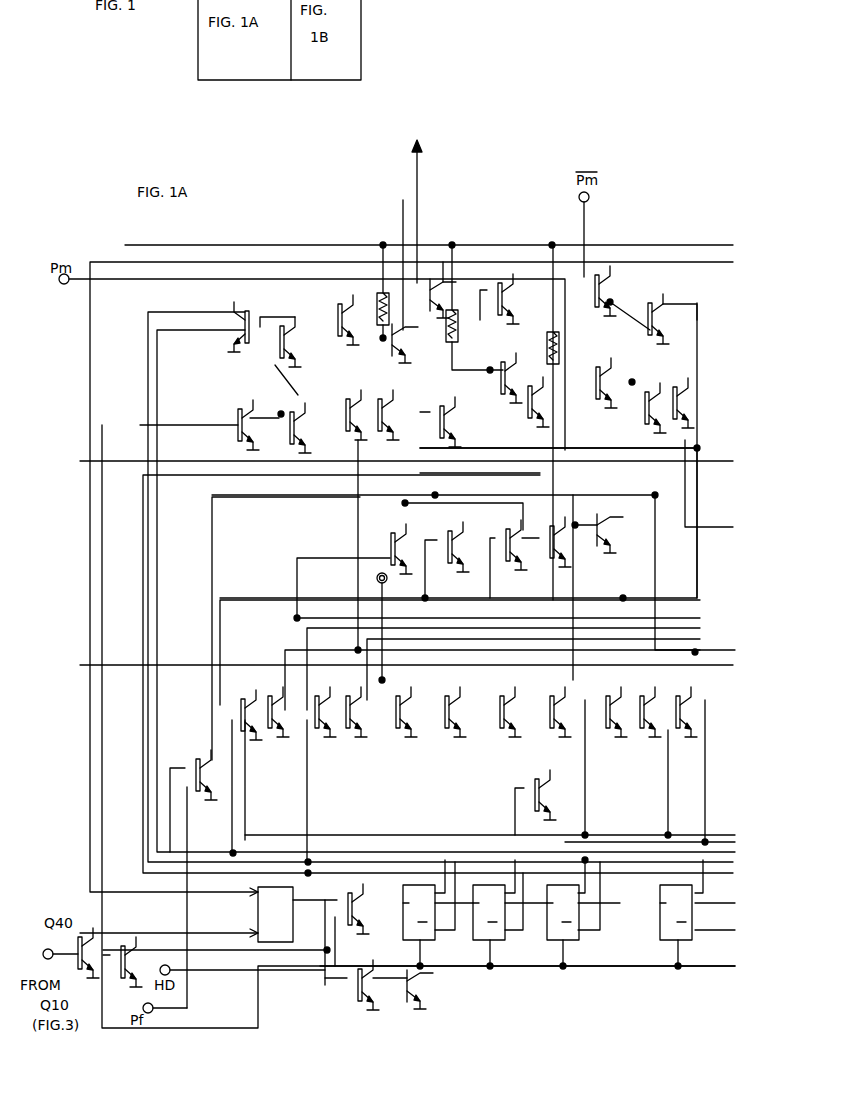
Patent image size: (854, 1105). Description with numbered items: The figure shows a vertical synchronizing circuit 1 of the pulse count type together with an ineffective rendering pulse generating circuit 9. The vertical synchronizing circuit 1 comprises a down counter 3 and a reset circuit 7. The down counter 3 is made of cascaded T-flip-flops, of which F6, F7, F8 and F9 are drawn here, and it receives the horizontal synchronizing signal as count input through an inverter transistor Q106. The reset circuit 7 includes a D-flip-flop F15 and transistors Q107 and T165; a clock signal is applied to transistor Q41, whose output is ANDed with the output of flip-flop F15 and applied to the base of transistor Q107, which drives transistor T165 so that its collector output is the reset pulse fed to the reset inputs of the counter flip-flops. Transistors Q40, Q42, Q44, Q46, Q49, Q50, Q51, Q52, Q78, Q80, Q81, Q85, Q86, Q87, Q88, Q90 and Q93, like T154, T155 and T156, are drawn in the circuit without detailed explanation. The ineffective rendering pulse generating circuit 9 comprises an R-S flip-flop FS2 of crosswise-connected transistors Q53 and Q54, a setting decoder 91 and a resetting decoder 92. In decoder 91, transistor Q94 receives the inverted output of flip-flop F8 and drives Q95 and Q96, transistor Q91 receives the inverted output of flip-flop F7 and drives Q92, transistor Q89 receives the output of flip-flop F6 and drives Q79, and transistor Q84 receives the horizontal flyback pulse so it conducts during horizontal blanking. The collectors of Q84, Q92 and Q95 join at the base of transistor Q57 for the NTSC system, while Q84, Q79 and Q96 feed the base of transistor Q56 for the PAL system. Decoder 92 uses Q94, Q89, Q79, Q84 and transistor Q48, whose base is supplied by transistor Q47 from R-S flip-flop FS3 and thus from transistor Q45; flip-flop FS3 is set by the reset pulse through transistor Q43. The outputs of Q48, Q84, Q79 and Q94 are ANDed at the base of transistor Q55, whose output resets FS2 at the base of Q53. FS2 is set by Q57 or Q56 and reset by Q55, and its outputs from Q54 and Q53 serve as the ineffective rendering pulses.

The vertical synchronizing circuit 1 is at (495, 1055).
The down counter 3 is at (620, 978).
The reset circuit 7 is at (312, 985).
The ineffective rendering pulse generating circuit 9 is at (604, 491).
The decoder 91 is at (672, 487).
The decoder 92 is at (696, 307).
The T-flip-flop F6 is at (427, 945).
The T-flip-flop F7 is at (495, 945).
The T-flip-flop F8 is at (565, 945).
The T-flip-flop F9 is at (670, 945).
The D-flip-flop F15 is at (280, 942).
The R-S flip-flop FS2 is at (615, 327).
The R-S flip-flop FS3 is at (275, 388).
The transistor Q40 is at (88, 953).
The transistor Q41 is at (122, 969).
The transistor Q42 is at (231, 342).
The transistor Q43 is at (236, 427).
The transistor Q44 is at (280, 325).
The transistor Q45 is at (291, 428).
The transistor Q46 is at (352, 406).
The transistor Q47 is at (343, 314).
The transistor Q48 is at (380, 422).
The transistor Q49 is at (437, 417).
The transistor Q50 is at (509, 299).
The transistor Q51 is at (489, 378).
The transistor Q52 is at (533, 397).
The transistor Q53 is at (613, 291).
The transistor Q54 is at (599, 397).
The transistor Q55 is at (672, 371).
The transistor Q56 is at (640, 397).
The transistor Q57 is at (673, 394).
The transistor Q78 is at (386, 544).
The transistor Q79 is at (448, 556).
The transistor Q80 is at (509, 559).
The transistor Q81 is at (549, 555).
The transistor Q84 is at (193, 791).
The transistor Q85 is at (243, 709).
The transistor Q86 is at (271, 731).
The transistor Q87 is at (324, 731).
The transistor Q88 is at (361, 731).
The transistor Q89 is at (401, 731).
The transistor Q90 is at (466, 731).
The transistor Q91 is at (488, 712).
The transistor Q92 is at (553, 703).
The transistor Q93 is at (548, 801).
The transistor Q94 is at (614, 729).
The transistor Q95 is at (645, 737).
The transistor Q96 is at (684, 735).
The inverter transistor Q106 is at (363, 901).
The transistor Q107 is at (352, 1000).
The transistor T154 is at (409, 343).
The transistor T155 is at (437, 285).
The transistor T156 is at (602, 547).
The transistor T165 is at (404, 1005).